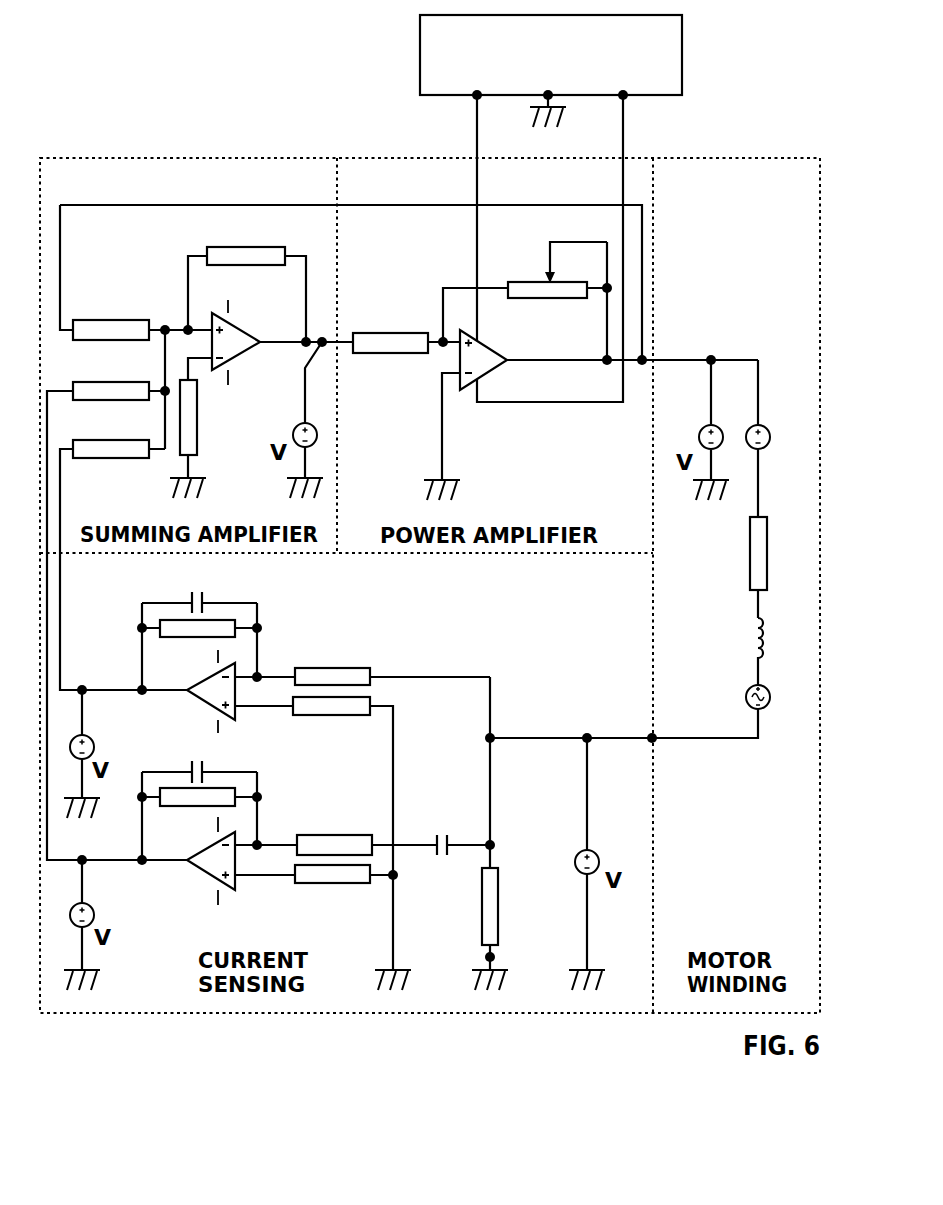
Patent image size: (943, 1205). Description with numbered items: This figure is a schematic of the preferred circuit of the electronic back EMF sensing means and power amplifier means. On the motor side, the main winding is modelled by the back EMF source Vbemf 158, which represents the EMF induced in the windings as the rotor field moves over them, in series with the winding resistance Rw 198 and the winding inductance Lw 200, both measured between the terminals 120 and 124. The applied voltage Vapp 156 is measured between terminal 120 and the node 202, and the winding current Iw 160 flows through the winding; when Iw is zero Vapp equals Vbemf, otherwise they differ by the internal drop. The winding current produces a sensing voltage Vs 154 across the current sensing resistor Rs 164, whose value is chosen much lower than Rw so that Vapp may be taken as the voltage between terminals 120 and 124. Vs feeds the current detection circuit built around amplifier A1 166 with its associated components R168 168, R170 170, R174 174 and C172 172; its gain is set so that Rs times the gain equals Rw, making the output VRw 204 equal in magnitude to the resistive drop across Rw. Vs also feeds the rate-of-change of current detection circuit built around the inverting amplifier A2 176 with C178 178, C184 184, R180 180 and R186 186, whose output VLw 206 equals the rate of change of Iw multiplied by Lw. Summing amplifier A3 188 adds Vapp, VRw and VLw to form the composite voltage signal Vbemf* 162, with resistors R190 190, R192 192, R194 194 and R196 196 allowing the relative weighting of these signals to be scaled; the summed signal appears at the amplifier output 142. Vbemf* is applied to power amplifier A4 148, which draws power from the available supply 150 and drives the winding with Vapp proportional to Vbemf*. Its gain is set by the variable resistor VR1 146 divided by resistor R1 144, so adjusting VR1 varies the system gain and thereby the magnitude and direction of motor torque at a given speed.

The available supply 150 is at (551, 55).
The terminal 120 is at (700, 347).
The terminal 124 is at (624, 724).
The summing amplifier output 142 is at (300, 323).
The resistor R1 144 is at (390, 327).
The variable resistor VR1 146 is at (555, 301).
The power amplifier A4 148 is at (498, 353).
The voltage Vs 154 is at (606, 850).
The voltage Vapp 156 is at (693, 425).
The Vbemf 158 is at (779, 695).
The current Iw 160 is at (775, 424).
The composite voltage signal Vbemf* 162 is at (289, 410).
The current sensing resistor Rs 164 is at (513, 906).
The amplifier A1 166 is at (211, 691).
The resistor R168 168 is at (332, 661).
The resistor R170 170 is at (192, 644).
The capacitor C172 172 is at (172, 592).
The resistor R174 174 is at (331, 722).
The amplifier A2 176 is at (211, 861).
The capacitor C178 178 is at (441, 829).
The resistor R180 180 is at (261, 821).
The capacitor C184 184 is at (172, 762).
The resistor R186 186 is at (332, 891).
The summing amplifier A3 188 is at (236, 341).
The resistor R190 190 is at (111, 316).
The resistor R192 192 is at (111, 376).
The resistor R194 194 is at (111, 434).
The resistor R196 196 is at (246, 241).
The winding resistance Rw 198 is at (495, 485).
The winding inductance Lw 200 is at (784, 638).
The node 202 is at (513, 955).
The A1 output voltage VRw 204 is at (100, 734).
The A2 output voltage VLw 206 is at (100, 903).